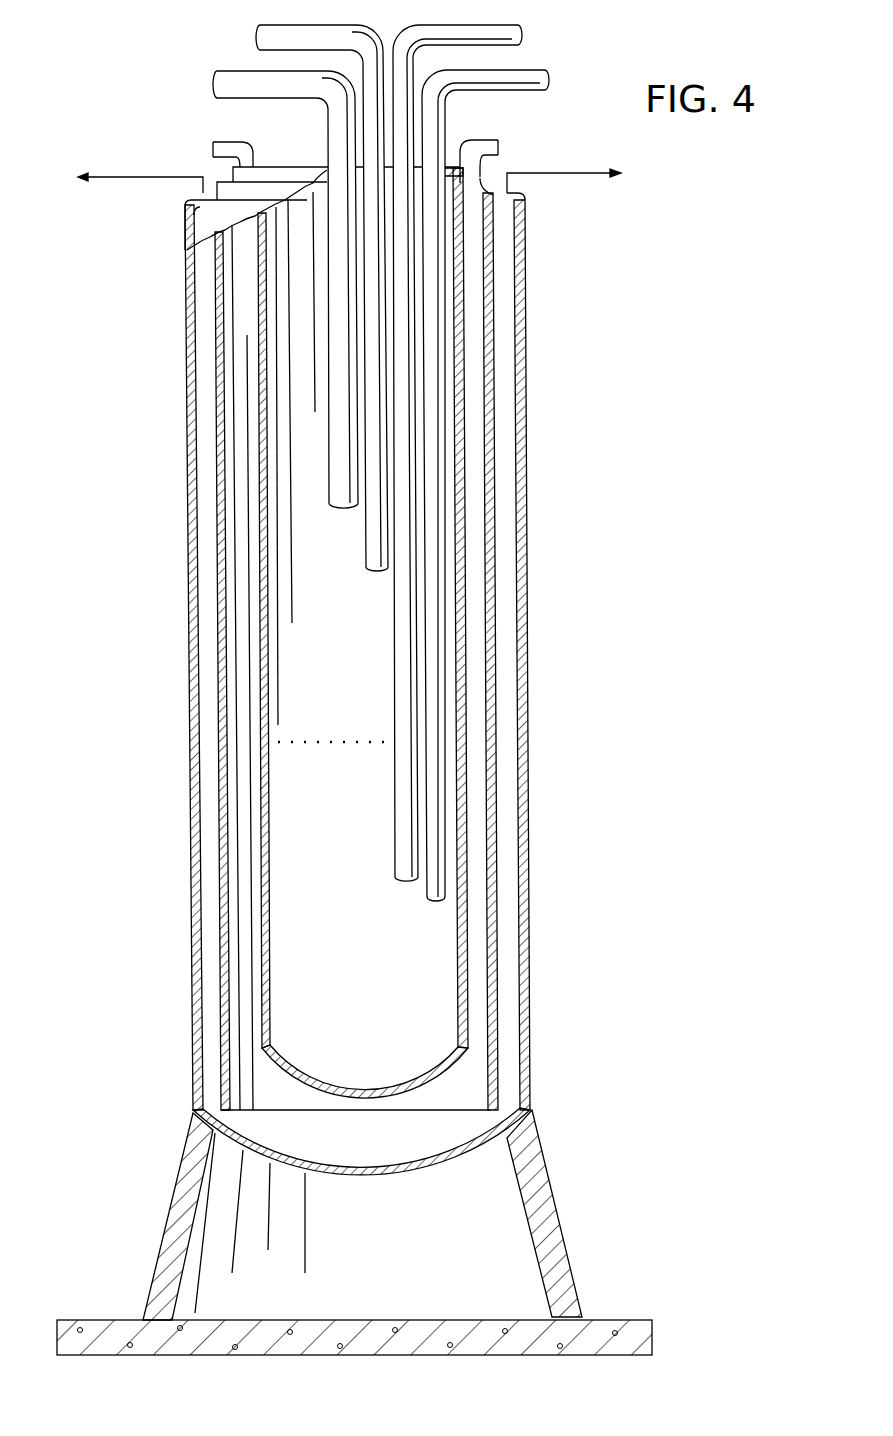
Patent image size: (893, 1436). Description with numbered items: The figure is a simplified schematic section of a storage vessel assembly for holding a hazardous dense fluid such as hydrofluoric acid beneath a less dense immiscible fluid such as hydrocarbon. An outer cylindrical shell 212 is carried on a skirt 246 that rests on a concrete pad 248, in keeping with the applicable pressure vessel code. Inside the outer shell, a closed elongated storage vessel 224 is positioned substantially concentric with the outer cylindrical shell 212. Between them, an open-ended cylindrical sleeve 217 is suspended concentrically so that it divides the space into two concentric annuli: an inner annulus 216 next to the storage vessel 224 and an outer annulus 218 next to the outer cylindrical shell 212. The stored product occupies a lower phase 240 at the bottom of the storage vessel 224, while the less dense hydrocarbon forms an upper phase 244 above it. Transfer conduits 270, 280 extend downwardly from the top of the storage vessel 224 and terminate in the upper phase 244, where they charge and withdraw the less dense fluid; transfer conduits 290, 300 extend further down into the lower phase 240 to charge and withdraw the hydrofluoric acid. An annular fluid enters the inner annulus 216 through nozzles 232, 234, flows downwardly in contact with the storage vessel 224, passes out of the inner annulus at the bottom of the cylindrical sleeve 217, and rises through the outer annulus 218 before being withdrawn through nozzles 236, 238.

The outer cylindrical shell 212 is at (425, 1172).
The inner annulus 216 is at (477, 750).
The cylindrical sleeve 217 is at (492, 785).
The outer annulus 218 is at (507, 815).
The storage vessel 224 is at (378, 1098).
The nozzle 232 is at (230, 140).
The nozzle 234 is at (557, 146).
The nozzle 236 is at (130, 172).
The nozzle 238 is at (560, 175).
The lower phase 240 is at (352, 845).
The upper phase 244 is at (352, 723).
The skirt 246 is at (170, 1205).
The concrete pad 248 is at (110, 1318).
The transfer conduit 270 is at (240, 70).
The transfer conduit 280 is at (280, 28).
The transfer conduit 290 is at (495, 25).
The transfer conduit 300 is at (530, 70).